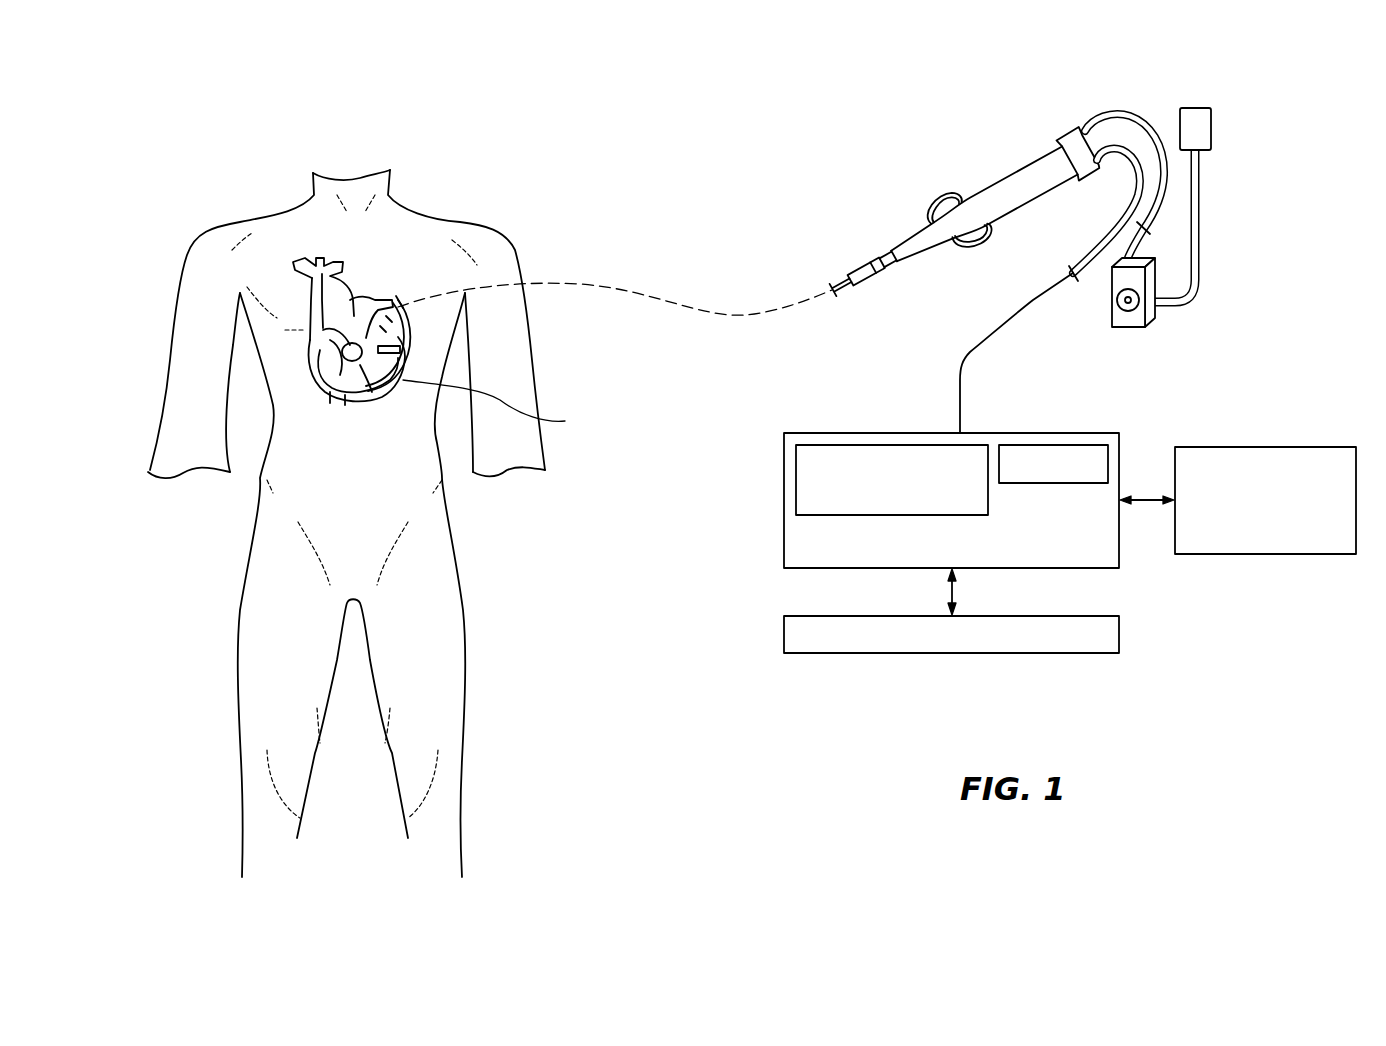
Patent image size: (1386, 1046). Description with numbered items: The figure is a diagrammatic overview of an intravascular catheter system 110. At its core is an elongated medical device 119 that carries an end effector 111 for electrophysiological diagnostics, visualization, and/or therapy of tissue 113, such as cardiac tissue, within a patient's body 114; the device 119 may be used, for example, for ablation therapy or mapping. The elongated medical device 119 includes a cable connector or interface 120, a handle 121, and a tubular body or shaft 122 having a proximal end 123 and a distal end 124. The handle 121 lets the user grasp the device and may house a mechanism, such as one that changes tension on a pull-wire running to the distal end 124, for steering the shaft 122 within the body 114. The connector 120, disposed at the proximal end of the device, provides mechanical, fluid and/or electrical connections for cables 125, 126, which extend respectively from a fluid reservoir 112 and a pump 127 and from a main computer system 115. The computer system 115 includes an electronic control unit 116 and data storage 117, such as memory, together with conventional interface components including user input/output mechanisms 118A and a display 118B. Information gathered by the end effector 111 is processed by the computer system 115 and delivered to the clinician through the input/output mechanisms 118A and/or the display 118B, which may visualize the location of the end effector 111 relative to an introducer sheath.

The intravascular catheter system 110 is at (730, 137).
The end effector 111 is at (355, 355).
The fluid reservoir 112 is at (1211, 125).
The tissue 113 is at (615, 360).
The patient's body 114 is at (260, 655).
The main computer system 115 is at (902, 469).
The electronic control unit 116 is at (907, 445).
The data storage 117 is at (1063, 445).
The user input/output mechanisms 118A is at (1119, 636).
The display 118B is at (1264, 447).
The elongated medical device 119 is at (961, 213).
The cable connector 120 is at (1074, 134).
The handle 121 is at (1027, 175).
The tubular body or shaft 122 is at (843, 292).
The proximal end 123 is at (850, 256).
The distal end 124 is at (354, 314).
The cable 125 is at (1126, 117).
The cable 126 is at (1110, 168).
The pump 127 is at (1178, 320).